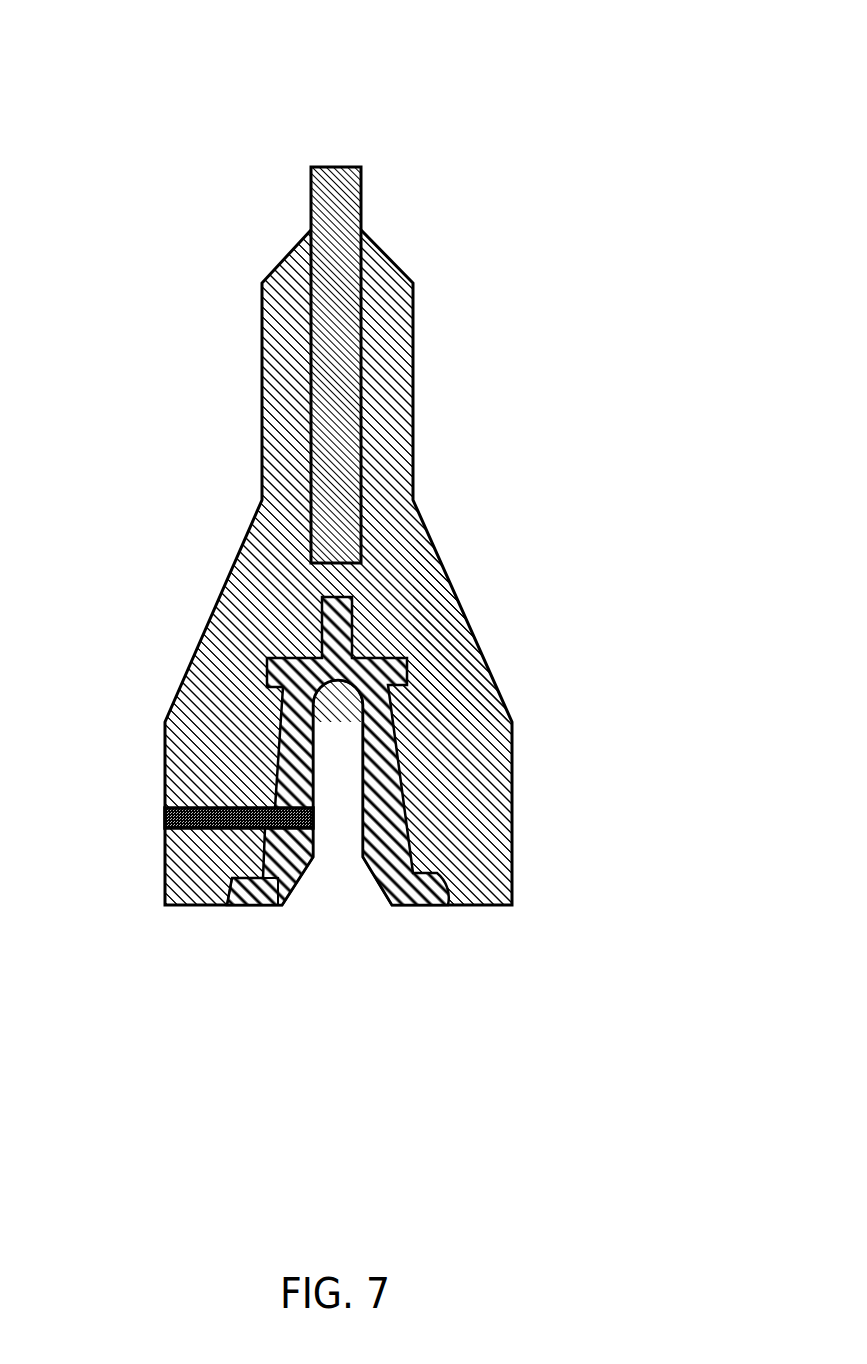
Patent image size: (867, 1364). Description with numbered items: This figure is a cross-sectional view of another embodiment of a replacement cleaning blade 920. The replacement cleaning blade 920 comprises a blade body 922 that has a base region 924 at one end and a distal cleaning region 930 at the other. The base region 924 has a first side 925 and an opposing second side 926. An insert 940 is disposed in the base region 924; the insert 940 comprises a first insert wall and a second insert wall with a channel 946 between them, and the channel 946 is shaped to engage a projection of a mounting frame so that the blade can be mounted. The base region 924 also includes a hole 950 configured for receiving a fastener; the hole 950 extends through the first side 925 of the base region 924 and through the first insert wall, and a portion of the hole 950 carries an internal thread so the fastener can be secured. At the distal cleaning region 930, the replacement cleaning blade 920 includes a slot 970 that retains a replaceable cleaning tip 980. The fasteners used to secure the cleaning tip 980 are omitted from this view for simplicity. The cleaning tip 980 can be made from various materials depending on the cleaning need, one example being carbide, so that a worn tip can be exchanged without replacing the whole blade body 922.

The replacement cleaning blade 920 is at (309, 499).
The blade body 922 is at (180, 592).
The base region 924 is at (132, 753).
The first side 925 is at (165, 872).
The second side 926 is at (512, 813).
The distal cleaning region 930 is at (230, 288).
The insert 940 is at (277, 905).
The channel 946 is at (345, 713).
The hole 950 is at (162, 818).
The slot 970 is at (363, 232).
The replaceable cleaning tip 980 is at (342, 175).